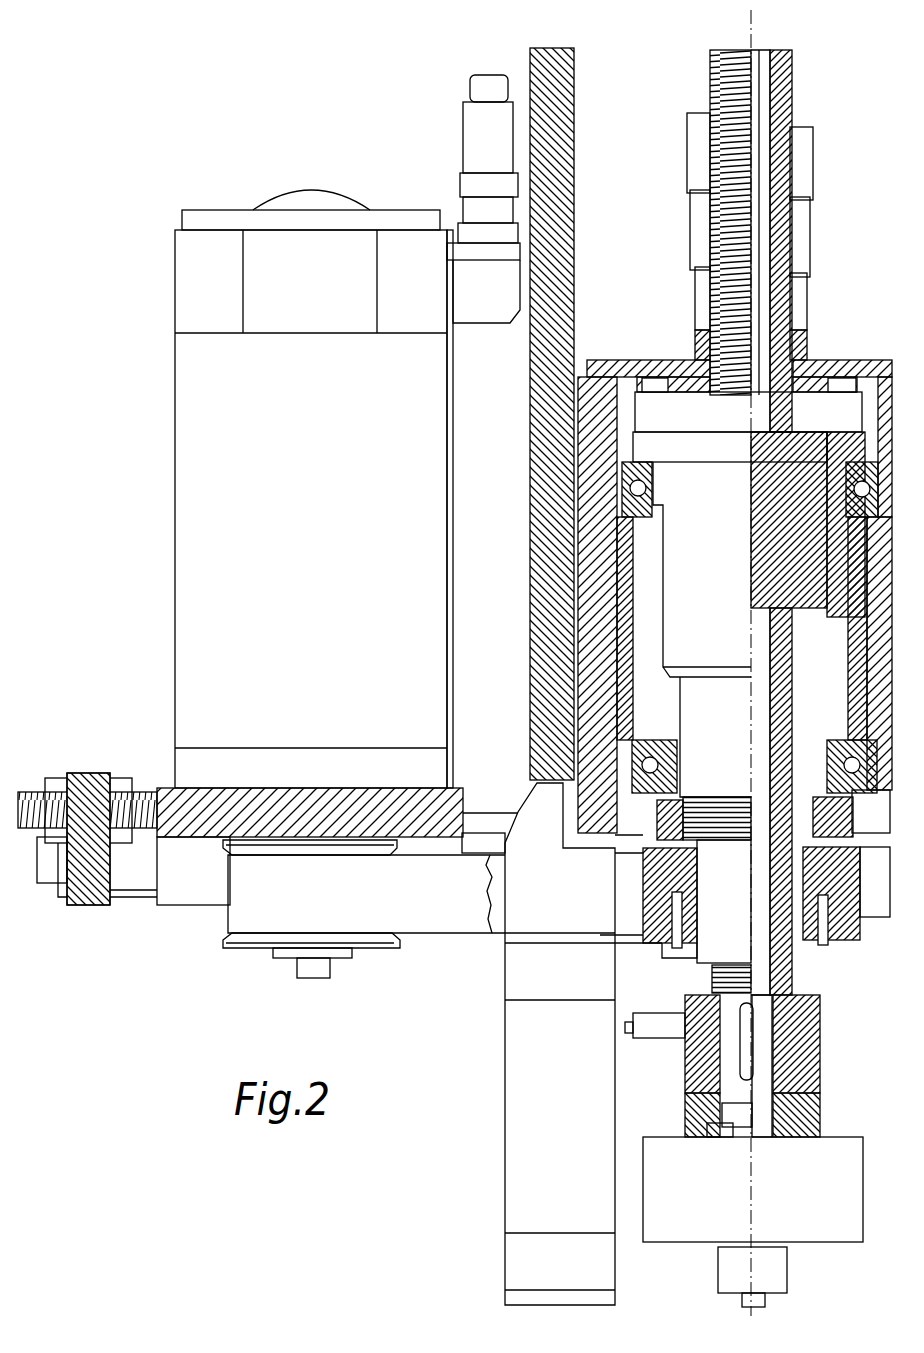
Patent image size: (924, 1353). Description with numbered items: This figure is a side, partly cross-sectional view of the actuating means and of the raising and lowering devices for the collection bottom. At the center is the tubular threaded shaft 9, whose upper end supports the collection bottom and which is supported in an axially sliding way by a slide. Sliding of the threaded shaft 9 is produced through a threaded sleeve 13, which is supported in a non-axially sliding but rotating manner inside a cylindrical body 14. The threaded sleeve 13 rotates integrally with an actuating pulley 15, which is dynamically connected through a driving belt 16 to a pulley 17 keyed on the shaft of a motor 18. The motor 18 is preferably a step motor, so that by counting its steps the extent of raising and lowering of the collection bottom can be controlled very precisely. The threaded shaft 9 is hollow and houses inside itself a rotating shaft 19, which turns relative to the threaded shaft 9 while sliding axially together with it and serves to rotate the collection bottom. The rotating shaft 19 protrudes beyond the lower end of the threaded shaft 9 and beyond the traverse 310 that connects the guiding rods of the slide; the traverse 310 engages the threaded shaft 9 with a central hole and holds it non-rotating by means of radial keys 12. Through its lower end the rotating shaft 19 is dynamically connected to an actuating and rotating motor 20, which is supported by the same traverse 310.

The threaded shaft 9 is at (778, 97).
The rotating shaft 19 is at (760, 48).
The cylindrical body 14 is at (600, 567).
The threaded sleeve 13 is at (680, 630).
The motor 18 is at (188, 445).
The pulley 17 is at (257, 947).
The driving belt 16 is at (420, 920).
The actuating pulley 15 is at (847, 937).
The radial keys 12 is at (743, 1052).
The traverse 310 is at (815, 1033).
The actuating and rotating motor 20 is at (818, 1228).